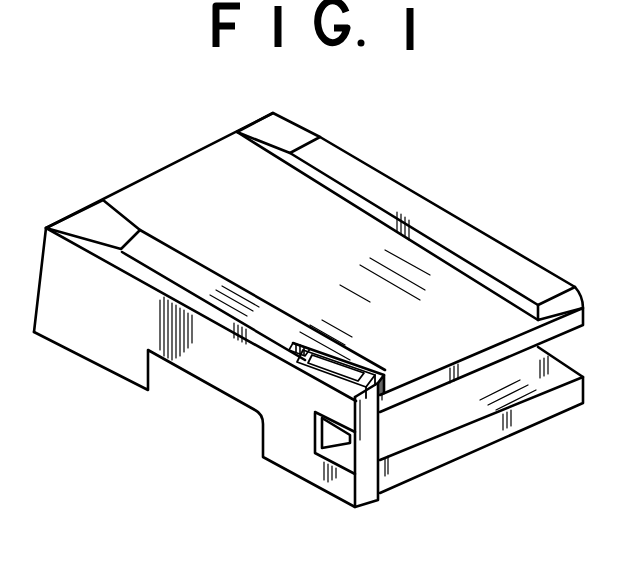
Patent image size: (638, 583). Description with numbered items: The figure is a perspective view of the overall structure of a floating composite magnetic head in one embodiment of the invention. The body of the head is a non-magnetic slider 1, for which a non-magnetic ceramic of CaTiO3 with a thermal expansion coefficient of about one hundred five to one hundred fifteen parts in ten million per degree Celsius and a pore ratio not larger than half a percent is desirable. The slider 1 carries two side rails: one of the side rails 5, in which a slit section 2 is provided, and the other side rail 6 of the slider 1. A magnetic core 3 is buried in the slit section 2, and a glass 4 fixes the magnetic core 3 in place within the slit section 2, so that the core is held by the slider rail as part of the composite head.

The non-magnetic slider 1 is at (170, 190).
The slit section 2 is at (347, 353).
The magnetic core 3 is at (372, 503).
The glass 4 is at (292, 355).
The side rail 5 is at (268, 322).
The other side rail 6 is at (450, 223).